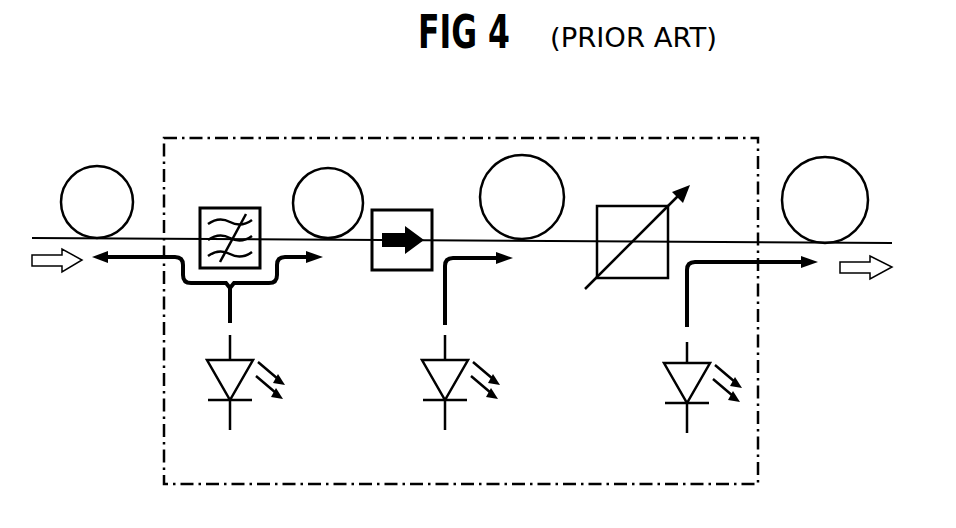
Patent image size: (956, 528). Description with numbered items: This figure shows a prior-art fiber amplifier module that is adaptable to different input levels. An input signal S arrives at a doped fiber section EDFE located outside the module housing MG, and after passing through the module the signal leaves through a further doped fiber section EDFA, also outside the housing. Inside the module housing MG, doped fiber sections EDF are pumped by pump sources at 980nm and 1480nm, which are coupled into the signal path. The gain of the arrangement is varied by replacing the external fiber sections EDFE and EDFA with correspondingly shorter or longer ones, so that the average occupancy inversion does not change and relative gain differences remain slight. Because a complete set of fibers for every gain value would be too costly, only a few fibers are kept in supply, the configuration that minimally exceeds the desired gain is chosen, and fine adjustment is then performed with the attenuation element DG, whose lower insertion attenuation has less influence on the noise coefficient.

The input optical signal S is at (57, 274).
The doped fiber section at the input EDFE is at (97, 202).
The erbium-doped fiber EDF is at (428, 197).
The doped fiber section at the output EDFA is at (825, 200).
The 980 nm pump laser diode 980nm is at (207, 360).
The 1480 nm pump laser diode 1480nm is at (610, 361).
The attenuation element DG is at (643, 280).
The module housing MG is at (758, 327).